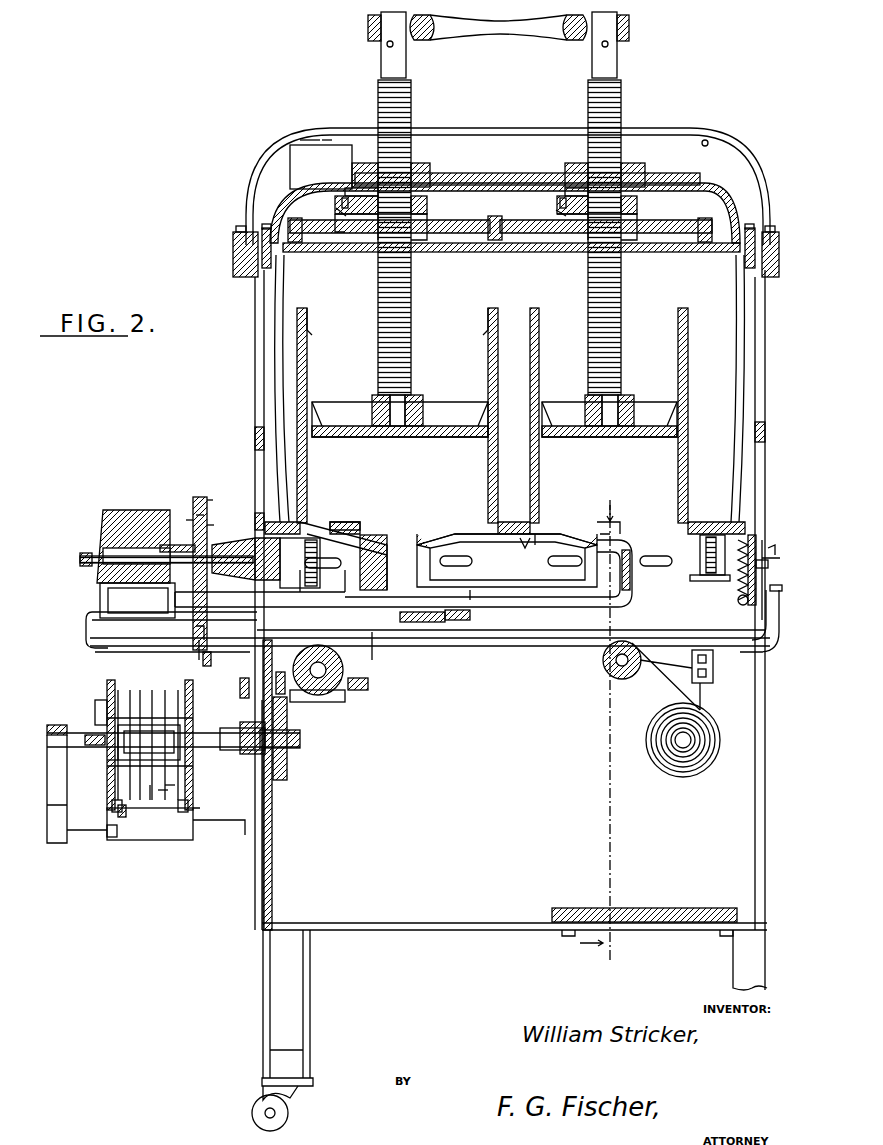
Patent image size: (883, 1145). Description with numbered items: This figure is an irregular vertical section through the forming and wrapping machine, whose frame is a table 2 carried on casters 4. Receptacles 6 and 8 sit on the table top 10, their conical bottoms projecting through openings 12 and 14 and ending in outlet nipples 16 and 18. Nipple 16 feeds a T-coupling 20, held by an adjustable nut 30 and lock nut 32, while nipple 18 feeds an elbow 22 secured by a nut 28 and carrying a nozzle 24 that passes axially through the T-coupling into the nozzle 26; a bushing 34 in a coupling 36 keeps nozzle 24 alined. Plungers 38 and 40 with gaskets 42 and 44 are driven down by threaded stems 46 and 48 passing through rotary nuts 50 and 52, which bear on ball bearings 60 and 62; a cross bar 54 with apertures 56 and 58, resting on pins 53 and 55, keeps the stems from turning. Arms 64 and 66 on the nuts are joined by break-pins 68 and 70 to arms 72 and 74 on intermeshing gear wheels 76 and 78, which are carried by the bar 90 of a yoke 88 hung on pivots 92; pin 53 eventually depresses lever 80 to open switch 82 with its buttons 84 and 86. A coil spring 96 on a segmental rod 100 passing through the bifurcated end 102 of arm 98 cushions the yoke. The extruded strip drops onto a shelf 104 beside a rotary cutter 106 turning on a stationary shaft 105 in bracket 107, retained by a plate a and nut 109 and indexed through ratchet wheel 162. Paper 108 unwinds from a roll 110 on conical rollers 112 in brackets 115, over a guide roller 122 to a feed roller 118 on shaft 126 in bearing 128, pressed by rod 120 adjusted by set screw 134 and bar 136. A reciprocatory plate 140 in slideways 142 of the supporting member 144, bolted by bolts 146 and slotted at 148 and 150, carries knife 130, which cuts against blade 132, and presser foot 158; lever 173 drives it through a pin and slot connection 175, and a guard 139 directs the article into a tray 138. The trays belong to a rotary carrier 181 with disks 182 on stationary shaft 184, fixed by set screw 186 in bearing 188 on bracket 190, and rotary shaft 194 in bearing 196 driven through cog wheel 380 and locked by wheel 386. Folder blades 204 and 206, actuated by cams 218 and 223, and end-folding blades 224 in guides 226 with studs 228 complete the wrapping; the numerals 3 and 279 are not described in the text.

The table 2 is at (262, 892).
The section line 3 is at (598, 732).
The casters 4 is at (254, 1113).
The receptacle 6 is at (397, 415).
The receptacle 8 is at (609, 415).
The table top 10 is at (257, 532).
The opening 12 is at (483, 548).
The opening 14 is at (552, 547).
The outlet nipple 16 is at (398, 550).
The outlet nipple 18 is at (598, 545).
The T-coupling 20 is at (405, 640).
The elbow 22 is at (625, 602).
The nozzle 24 is at (535, 600).
The nozzle 26 is at (260, 590).
The nut 28 is at (636, 572).
The adjustable nut 30 is at (386, 576).
The lock nut 32 is at (365, 545).
The bushing 34 is at (482, 612).
The coupling 36 is at (455, 625).
The plunger 38 is at (340, 410).
The plunger 40 is at (563, 402).
The gasket 42 is at (376, 440).
The gasket 44 is at (590, 440).
The stem 46 is at (388, 300).
The stem 48 is at (620, 300).
The rotary nut 50 is at (427, 214).
The rotary nut 52 is at (640, 210).
The pin 53 is at (386, 46).
The cross bar 54 is at (503, 30).
The pin 55 is at (616, 46).
The rectangular aperture 56 is at (426, 33).
The rectangular aperture 58 is at (578, 33).
The ball bearing 60 is at (420, 172).
The ball bearing 62 is at (588, 172).
The arm 64 is at (342, 203).
The arm 66 is at (560, 204).
The break-pin 68 is at (355, 186).
The break-pin 70 is at (575, 186).
The arm 72 is at (340, 209).
The arm 74 is at (558, 211).
The gear wheel 76 is at (467, 236).
The gear wheel 78 is at (535, 236).
The lever 80 is at (355, 128).
The switch 82 is at (290, 152).
The push button 84 is at (327, 144).
The push button 86 is at (320, 143).
The yoke 88 is at (255, 380).
The longitudinal bar 90 is at (313, 257).
The pivots 92 is at (720, 534).
The coil spring 96 is at (738, 600).
The arm 98 is at (740, 606).
The segmental rod 100 is at (736, 585).
The bifurcated lower end 102 is at (750, 612).
The shelf 104 is at (90, 616).
The stationary shaft 105 is at (80, 560).
The rotary cutter 106 is at (45, 517).
The bracket 107 is at (246, 552).
The wrapping paper 108 is at (95, 652).
The nut 109 is at (80, 556).
The roll 110 is at (677, 768).
The conical roller 112 is at (706, 762).
The bracket 115 is at (710, 682).
The feed roller 118 is at (318, 696).
The rod 120 is at (374, 653).
The guide roller 122 is at (620, 680).
The shaft 126 is at (345, 694).
The bearing 128 is at (368, 686).
The reciprocatory knife 130 is at (198, 647).
The stationary blade 132 is at (211, 658).
The set screw 134 is at (777, 542).
The bar 136 is at (772, 642).
The tray 138 is at (107, 670).
The guard 139 is at (185, 590).
The reciprocatory plate 140 is at (196, 497).
The slideways 142 is at (192, 520).
The supporting member 144 is at (205, 500).
The bolts 146 is at (196, 633).
The slot 148 is at (208, 525).
The slot 150 is at (202, 517).
The presser foot 158 is at (88, 636).
The ratchet wheel 162 is at (178, 546).
The lever 173 is at (251, 696).
The pin and slot connection 175 is at (250, 688).
The rotary carrier 181 is at (112, 812).
The disk 182 is at (118, 826).
The stationary shaft 184 is at (52, 738).
The set screw 186 is at (52, 726).
The bearing 188 is at (55, 781).
The bracket 190 is at (50, 834).
The rotary shaft 194 is at (300, 740).
The bearing 196 is at (250, 756).
The curved folder blade 204 is at (152, 842).
The curved folder blade 206 is at (114, 762).
The stationary cam 218 is at (165, 792).
The stationary cam 223 is at (150, 790).
The reciprocatory blade 224 is at (116, 838).
The guide 226 is at (186, 815).
The stud 228 is at (97, 712).
The rod 279 is at (168, 786).
The cog wheel 380 is at (290, 778).
The wheel 386 is at (280, 760).
The circular plate a is at (72, 493).